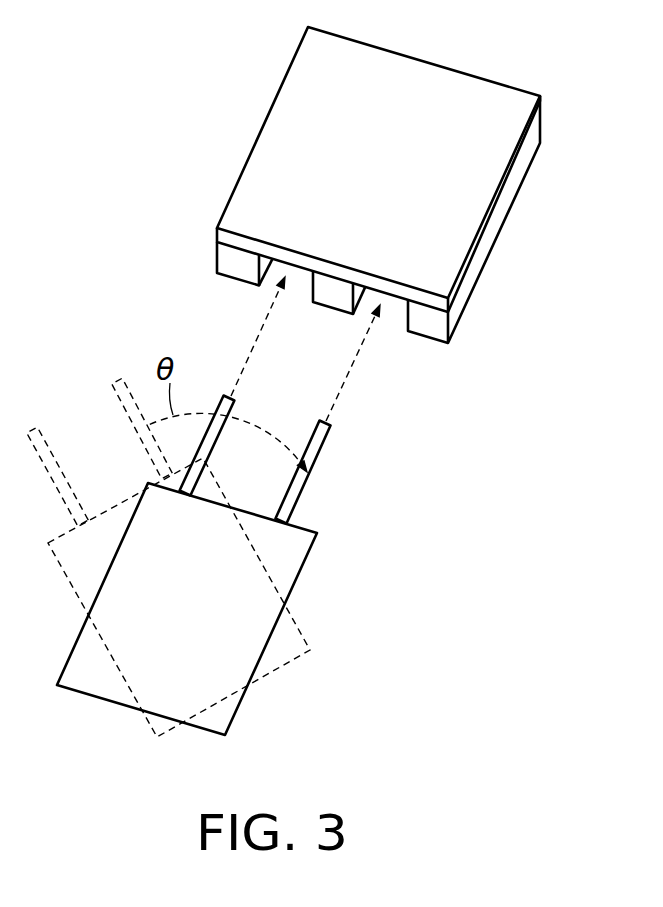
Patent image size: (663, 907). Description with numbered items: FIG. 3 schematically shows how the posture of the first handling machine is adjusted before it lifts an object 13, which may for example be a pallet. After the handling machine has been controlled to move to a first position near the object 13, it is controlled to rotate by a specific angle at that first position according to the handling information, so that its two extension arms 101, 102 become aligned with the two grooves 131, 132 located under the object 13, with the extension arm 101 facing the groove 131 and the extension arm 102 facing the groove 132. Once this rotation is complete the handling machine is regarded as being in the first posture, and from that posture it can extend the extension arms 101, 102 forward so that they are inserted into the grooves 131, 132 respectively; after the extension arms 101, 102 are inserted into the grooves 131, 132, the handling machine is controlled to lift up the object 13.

The object 13 is at (354, 205).
The groove 131 is at (267, 292).
The groove 132 is at (393, 322).
The extension arm 101 is at (232, 396).
The extension arm 102 is at (318, 440).